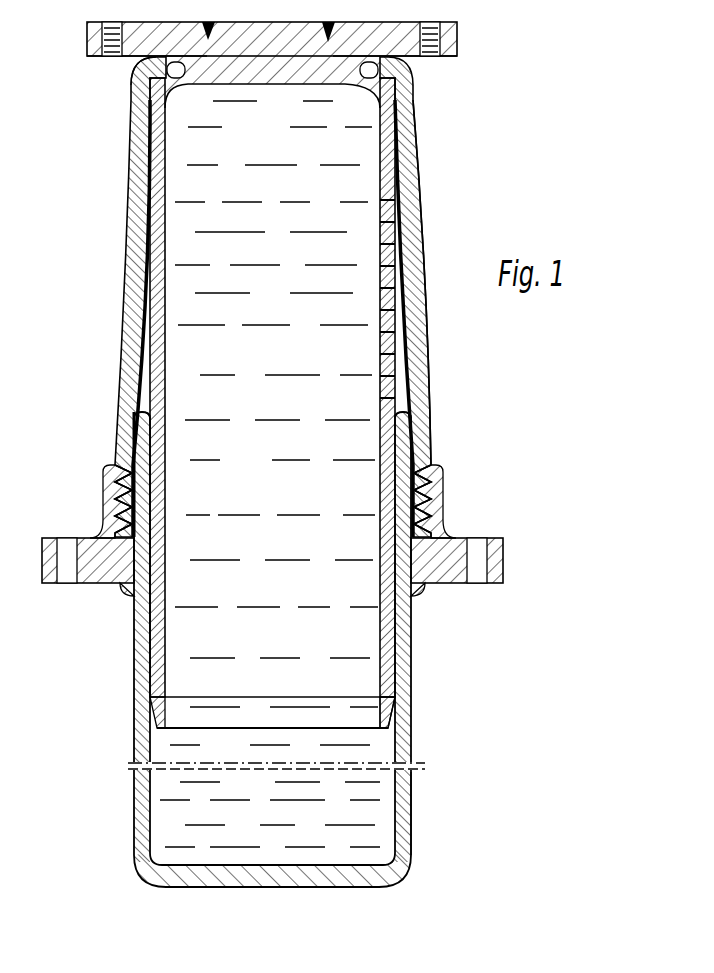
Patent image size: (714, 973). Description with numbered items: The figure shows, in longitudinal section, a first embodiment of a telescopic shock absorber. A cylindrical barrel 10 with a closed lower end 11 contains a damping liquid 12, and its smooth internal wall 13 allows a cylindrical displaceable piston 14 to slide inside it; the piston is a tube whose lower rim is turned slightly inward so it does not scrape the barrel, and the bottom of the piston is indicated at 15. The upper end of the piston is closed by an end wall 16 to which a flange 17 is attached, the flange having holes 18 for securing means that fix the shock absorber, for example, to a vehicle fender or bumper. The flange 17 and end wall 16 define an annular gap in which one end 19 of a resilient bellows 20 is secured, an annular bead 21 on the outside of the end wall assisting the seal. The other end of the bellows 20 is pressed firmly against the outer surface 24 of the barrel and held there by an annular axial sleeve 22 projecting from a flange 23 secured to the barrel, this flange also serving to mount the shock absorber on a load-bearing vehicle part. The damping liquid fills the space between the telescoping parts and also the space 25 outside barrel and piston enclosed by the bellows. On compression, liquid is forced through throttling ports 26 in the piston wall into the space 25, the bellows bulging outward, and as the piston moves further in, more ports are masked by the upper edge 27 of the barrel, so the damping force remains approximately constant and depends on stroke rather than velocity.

The cylindrical barrel 10 is at (413, 825).
The closed lower end 11 is at (362, 872).
The damping liquid 12 is at (168, 819).
The internal wall 13 is at (167, 753).
The cylindrical displaceable piston 14 is at (158, 652).
The bottom of inner vessel 15 is at (382, 710).
The end wall 16 is at (372, 96).
The flange 17 is at (457, 57).
The holes 18 is at (108, 48).
The one end of bellows 19 is at (146, 74).
The resilient bellows 20 is at (129, 208).
The annular bead 21 is at (363, 74).
The annular axial sleeve 22 is at (432, 527).
The flange 23 is at (448, 583).
The outer surface 24 is at (413, 658).
The space 25 is at (150, 386).
The throttling ports 26 is at (407, 245).
The upper edge 27 is at (404, 430).